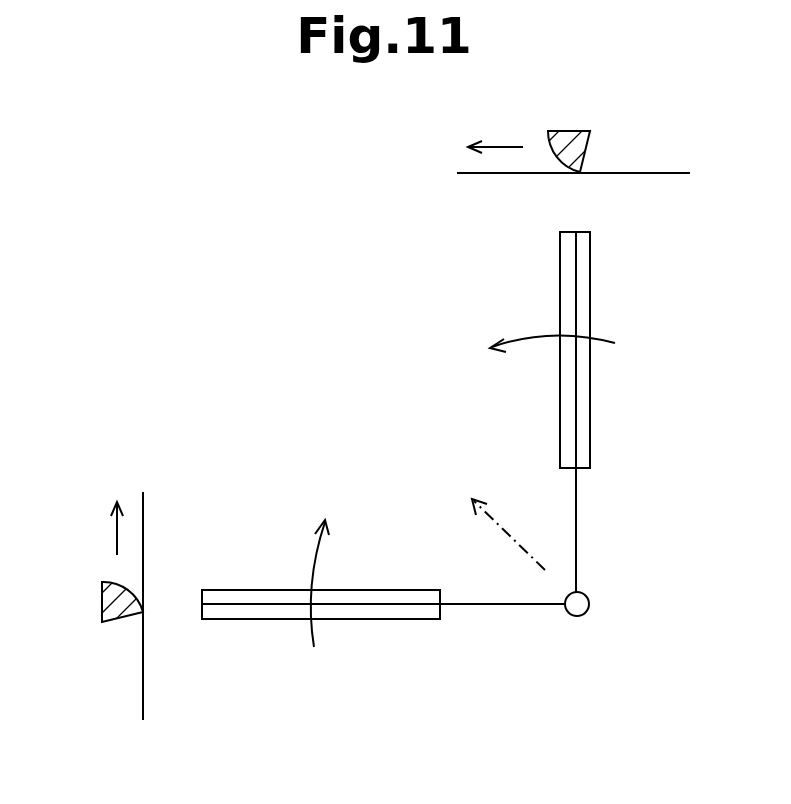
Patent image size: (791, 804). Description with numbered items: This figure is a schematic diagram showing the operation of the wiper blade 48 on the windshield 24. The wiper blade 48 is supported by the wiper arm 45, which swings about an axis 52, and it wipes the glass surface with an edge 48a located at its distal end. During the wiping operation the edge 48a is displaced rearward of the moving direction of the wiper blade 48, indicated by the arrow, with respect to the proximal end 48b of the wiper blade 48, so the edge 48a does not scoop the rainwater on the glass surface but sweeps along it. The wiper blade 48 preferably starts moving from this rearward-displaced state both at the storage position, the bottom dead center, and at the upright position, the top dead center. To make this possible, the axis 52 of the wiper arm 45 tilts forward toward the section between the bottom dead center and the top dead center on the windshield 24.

The windshield 24 is at (672, 172).
The wiper arm 45 is at (578, 517).
The wiper blade 48 is at (582, 150).
The edge 48a is at (580, 175).
The proximal end 48b is at (562, 131).
The axis 52 is at (590, 600).